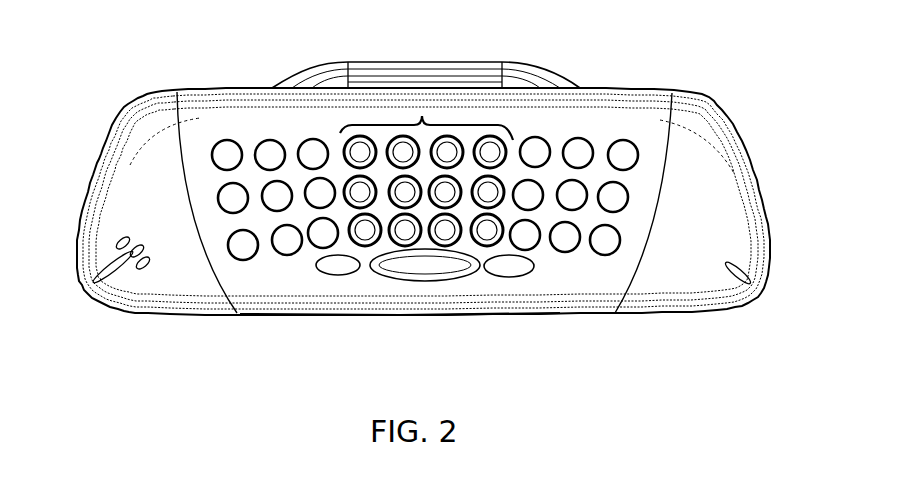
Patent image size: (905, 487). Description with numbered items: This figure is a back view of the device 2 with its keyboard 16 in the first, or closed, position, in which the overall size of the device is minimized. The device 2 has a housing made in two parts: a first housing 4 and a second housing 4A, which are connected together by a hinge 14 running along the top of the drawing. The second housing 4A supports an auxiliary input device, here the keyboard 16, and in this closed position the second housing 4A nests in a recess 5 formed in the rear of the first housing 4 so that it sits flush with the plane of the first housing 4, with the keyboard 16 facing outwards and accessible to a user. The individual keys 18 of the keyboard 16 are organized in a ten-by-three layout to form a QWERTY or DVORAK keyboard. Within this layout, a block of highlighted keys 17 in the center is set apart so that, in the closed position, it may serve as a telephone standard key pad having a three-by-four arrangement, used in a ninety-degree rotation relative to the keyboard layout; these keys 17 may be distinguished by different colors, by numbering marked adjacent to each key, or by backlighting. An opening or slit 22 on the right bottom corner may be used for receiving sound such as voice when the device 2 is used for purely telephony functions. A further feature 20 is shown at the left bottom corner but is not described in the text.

The device 2 is at (85, 49).
The first housing 4 is at (735, 135).
The second housing 4A is at (307, 317).
The recess 5 is at (650, 217).
The hinge 14 is at (397, 63).
The keyboard 16 is at (240, 108).
The highlighted keys 17 is at (422, 117).
The individual keys 18 is at (623, 145).
The speaker grille 20 is at (110, 300).
The opening or slit 22 is at (740, 298).